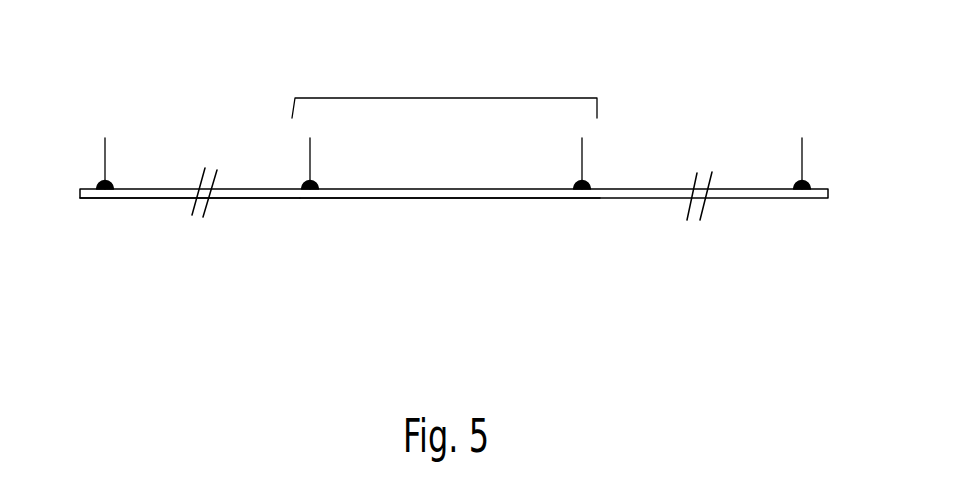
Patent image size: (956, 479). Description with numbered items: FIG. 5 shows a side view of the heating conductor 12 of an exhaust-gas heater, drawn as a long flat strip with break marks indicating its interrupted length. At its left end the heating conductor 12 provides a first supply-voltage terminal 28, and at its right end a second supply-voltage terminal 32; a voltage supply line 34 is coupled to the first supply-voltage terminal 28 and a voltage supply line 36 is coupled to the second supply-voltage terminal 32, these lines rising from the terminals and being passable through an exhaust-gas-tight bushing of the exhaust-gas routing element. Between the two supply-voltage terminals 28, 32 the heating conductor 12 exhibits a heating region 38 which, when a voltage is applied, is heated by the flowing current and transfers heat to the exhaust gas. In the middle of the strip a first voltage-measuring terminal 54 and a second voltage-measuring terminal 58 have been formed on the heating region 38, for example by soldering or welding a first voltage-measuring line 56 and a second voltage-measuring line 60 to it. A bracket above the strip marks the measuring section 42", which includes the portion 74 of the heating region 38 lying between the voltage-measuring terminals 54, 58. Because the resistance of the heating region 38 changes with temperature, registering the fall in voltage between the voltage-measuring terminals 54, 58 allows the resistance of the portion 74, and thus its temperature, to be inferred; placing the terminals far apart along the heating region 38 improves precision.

The heating conductor 12 is at (828, 195).
The first supply-voltage terminal 28 is at (97, 181).
The second supply-voltage terminal 32 is at (797, 184).
The voltage supply line 34 is at (105, 146).
The voltage supply line 36 is at (805, 150).
The heating region 38 is at (167, 199).
The measuring section 42 is at (445, 98).
The first voltage-measuring terminal 54 is at (317, 183).
The first voltage-measuring line 56 is at (307, 148).
The second voltage-measuring terminal 58 is at (578, 184).
The second voltage-measuring line 60 is at (585, 150).
The portion 74 is at (450, 199).